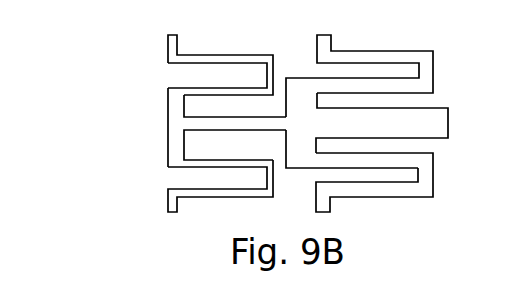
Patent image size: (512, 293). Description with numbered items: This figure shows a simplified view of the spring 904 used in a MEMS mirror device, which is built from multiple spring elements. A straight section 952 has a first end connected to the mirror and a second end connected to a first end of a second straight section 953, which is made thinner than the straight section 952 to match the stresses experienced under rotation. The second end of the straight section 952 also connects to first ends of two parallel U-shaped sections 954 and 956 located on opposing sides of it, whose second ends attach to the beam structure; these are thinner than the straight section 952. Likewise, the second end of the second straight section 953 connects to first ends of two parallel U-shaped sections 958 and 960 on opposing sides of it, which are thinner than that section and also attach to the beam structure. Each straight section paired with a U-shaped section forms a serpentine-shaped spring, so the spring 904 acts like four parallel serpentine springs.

The spring 904 is at (108, 55).
The straight section 952 is at (412, 133).
The second straight section 953 is at (215, 123).
The U-shaped section 954 is at (370, 56).
The U-shaped section 956 is at (425, 182).
The U-shaped section 958 is at (197, 62).
The U-shaped section 960 is at (193, 192).